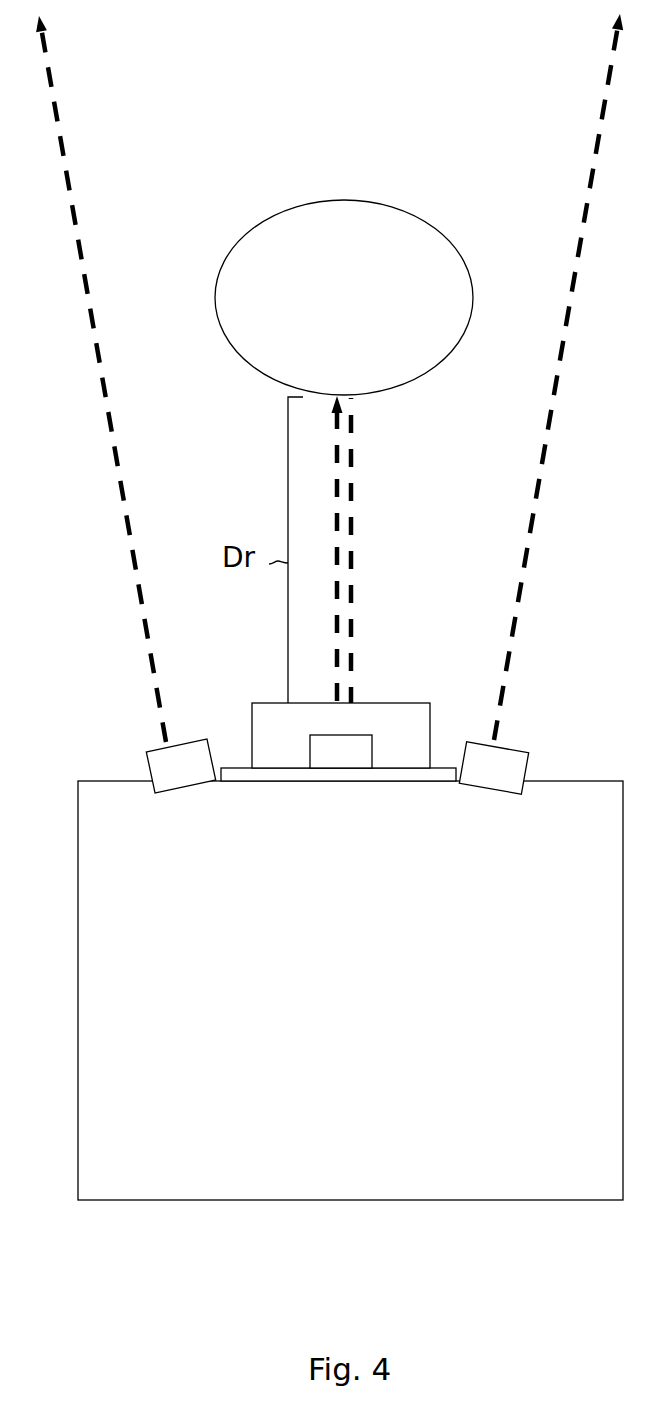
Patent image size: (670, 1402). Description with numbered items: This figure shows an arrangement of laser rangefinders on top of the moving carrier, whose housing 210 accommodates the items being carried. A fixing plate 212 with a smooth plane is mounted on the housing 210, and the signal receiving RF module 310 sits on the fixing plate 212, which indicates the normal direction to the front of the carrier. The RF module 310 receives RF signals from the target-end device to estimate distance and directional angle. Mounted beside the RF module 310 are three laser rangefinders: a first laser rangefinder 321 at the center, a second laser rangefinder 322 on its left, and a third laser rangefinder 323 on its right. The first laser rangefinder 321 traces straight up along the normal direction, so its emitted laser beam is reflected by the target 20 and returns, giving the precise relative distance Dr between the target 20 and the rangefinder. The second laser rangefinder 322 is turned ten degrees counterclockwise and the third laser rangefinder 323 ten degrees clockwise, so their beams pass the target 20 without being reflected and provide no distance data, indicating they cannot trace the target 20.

The target 20 is at (344, 297).
The housing 210 is at (350, 990).
The fixing plate 212 is at (443, 768).
The signal receiving RF module 310 is at (341, 735).
The first laser rangefinder 321 is at (341, 751).
The second laser rangefinder 322 is at (180, 766).
The third laser rangefinder 323 is at (493, 768).